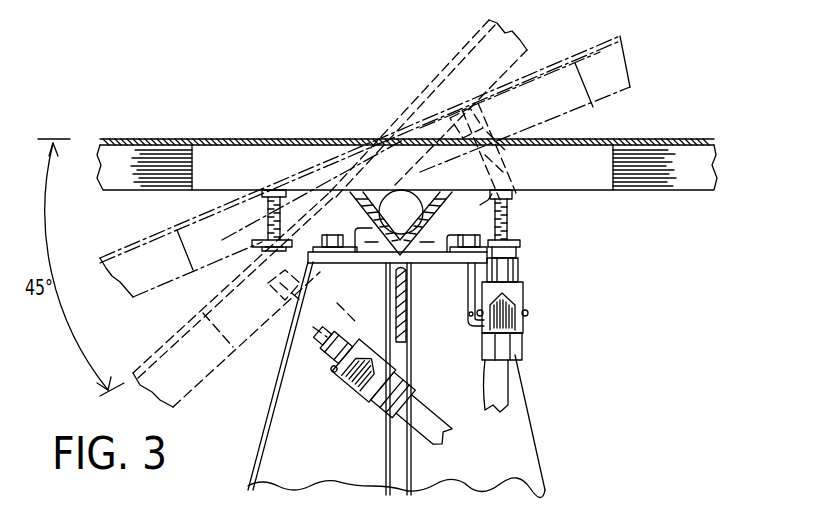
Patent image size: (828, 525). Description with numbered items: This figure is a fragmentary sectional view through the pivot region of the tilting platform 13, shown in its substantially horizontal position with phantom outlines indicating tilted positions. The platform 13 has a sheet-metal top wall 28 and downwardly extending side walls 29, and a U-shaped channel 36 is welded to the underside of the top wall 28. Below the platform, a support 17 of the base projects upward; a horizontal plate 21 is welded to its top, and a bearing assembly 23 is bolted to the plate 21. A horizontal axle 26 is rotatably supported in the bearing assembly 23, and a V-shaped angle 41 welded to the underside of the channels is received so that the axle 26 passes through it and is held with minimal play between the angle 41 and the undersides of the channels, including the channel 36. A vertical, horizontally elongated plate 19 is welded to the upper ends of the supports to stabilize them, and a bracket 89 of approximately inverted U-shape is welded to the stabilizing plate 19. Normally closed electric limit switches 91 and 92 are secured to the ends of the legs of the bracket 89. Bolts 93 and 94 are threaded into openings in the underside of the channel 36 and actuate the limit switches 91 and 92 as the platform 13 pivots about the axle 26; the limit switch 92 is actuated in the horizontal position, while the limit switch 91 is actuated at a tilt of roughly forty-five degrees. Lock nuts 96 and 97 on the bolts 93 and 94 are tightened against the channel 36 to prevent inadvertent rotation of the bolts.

The platform 13 is at (699, 133).
The support 17 is at (540, 460).
The plate 19 is at (403, 325).
The horizontal plate 21 is at (370, 265).
The bearing assembly 23 is at (364, 249).
The horizontal axle 26 is at (401, 212).
The top wall 28 is at (227, 139).
The side walls 29 is at (675, 173).
The U-shaped channel 36 is at (589, 160).
The V-shaped angle 41 is at (326, 203).
The bracket 89 is at (462, 267).
The limit switch 91 is at (358, 365).
The limit switch 92 is at (524, 292).
The bolt 93 is at (263, 218).
The bolt 94 is at (518, 224).
The lock nut 96 is at (257, 192).
The lock nut 97 is at (517, 207).